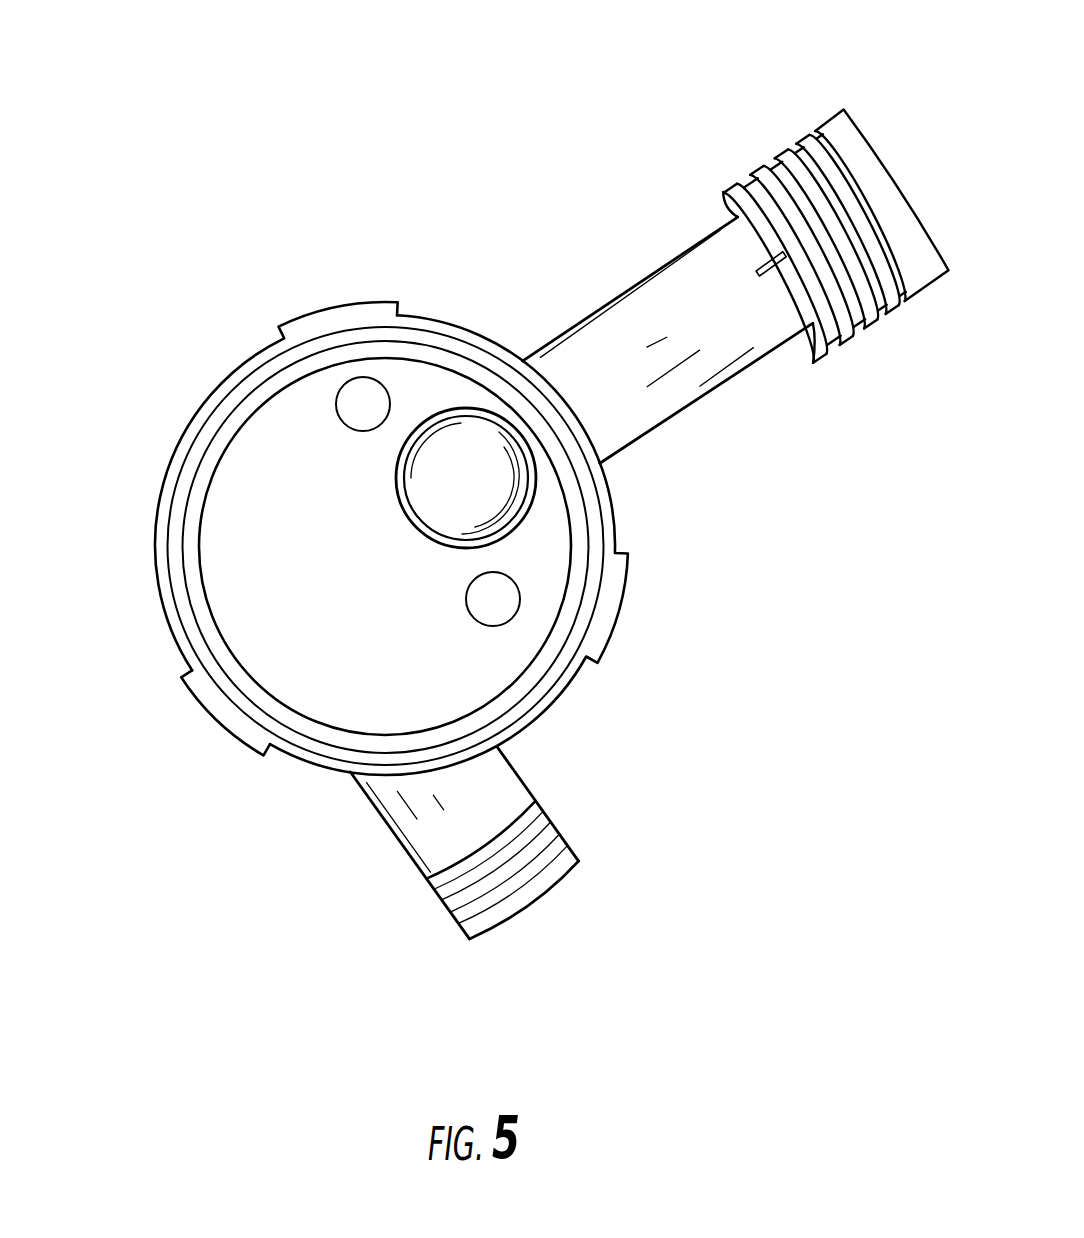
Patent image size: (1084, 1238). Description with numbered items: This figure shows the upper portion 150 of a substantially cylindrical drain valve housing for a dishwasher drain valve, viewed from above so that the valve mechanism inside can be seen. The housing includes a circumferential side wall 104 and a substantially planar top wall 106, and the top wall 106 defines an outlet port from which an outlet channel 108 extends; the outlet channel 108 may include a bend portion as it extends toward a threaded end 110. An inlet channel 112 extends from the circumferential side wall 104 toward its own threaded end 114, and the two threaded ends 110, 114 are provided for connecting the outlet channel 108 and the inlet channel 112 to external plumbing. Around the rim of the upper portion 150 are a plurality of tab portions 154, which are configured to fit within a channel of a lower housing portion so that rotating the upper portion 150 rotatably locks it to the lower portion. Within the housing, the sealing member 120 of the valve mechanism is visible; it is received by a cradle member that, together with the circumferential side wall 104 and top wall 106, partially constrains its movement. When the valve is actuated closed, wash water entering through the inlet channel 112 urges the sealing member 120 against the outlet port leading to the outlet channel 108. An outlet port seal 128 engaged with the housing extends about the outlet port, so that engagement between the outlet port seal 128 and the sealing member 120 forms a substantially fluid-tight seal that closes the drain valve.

The circumferential side wall 104 is at (183, 440).
The top wall 106 is at (303, 567).
The outlet channel 108 is at (657, 332).
The threaded end 110 is at (823, 187).
The inlet channel 112 is at (418, 817).
The threaded end 114 is at (507, 882).
The sealing member 120 is at (497, 502).
The outlet port seal 128 is at (417, 475).
The upper portion 150 is at (447, 635).
The tab portions 154 is at (243, 733).